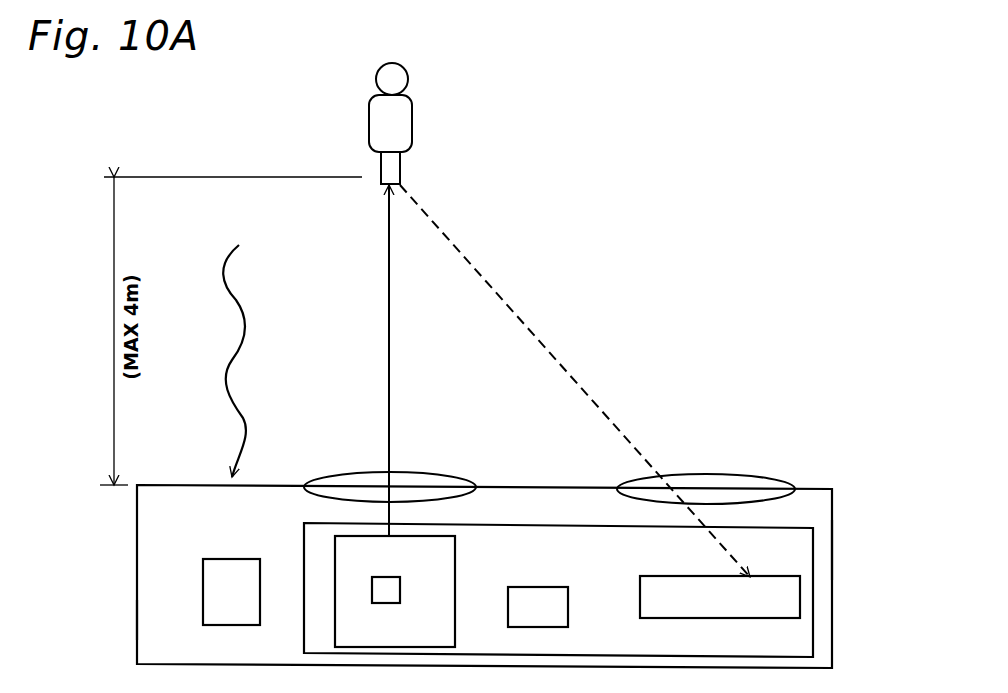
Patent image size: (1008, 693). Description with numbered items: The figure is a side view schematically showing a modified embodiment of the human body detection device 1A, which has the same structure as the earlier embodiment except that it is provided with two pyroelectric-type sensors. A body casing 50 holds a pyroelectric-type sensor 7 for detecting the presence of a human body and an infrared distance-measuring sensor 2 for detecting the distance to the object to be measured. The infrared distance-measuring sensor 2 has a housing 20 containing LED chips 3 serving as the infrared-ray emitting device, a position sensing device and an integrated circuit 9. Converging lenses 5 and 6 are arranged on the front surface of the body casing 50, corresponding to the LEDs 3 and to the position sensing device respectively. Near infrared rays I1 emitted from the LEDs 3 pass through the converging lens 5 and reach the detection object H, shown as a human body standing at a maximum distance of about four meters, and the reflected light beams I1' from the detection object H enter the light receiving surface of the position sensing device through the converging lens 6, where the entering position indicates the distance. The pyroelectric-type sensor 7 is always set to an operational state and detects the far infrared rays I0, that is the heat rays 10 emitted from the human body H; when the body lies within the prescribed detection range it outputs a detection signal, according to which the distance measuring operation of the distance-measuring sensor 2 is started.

The detection object H is at (403, 118).
The far infrared rays I0 is at (230, 362).
The near infrared rays I1 is at (436, 360).
The reflected light beams I1' is at (575, 381).
The human body detection device 1A is at (133, 552).
The body casing 50 is at (137, 628).
The infrared distance-measuring sensor 2 is at (815, 545).
The housing 20 is at (813, 562).
The converging lens 5 is at (428, 483).
The converging lens 6 is at (712, 484).
The pyroelectric-type sensor 7 is at (235, 559).
The LED chips 3 is at (400, 590).
The integrated circuit 9 is at (545, 587).
The far infrared rays 10 is at (800, 605).